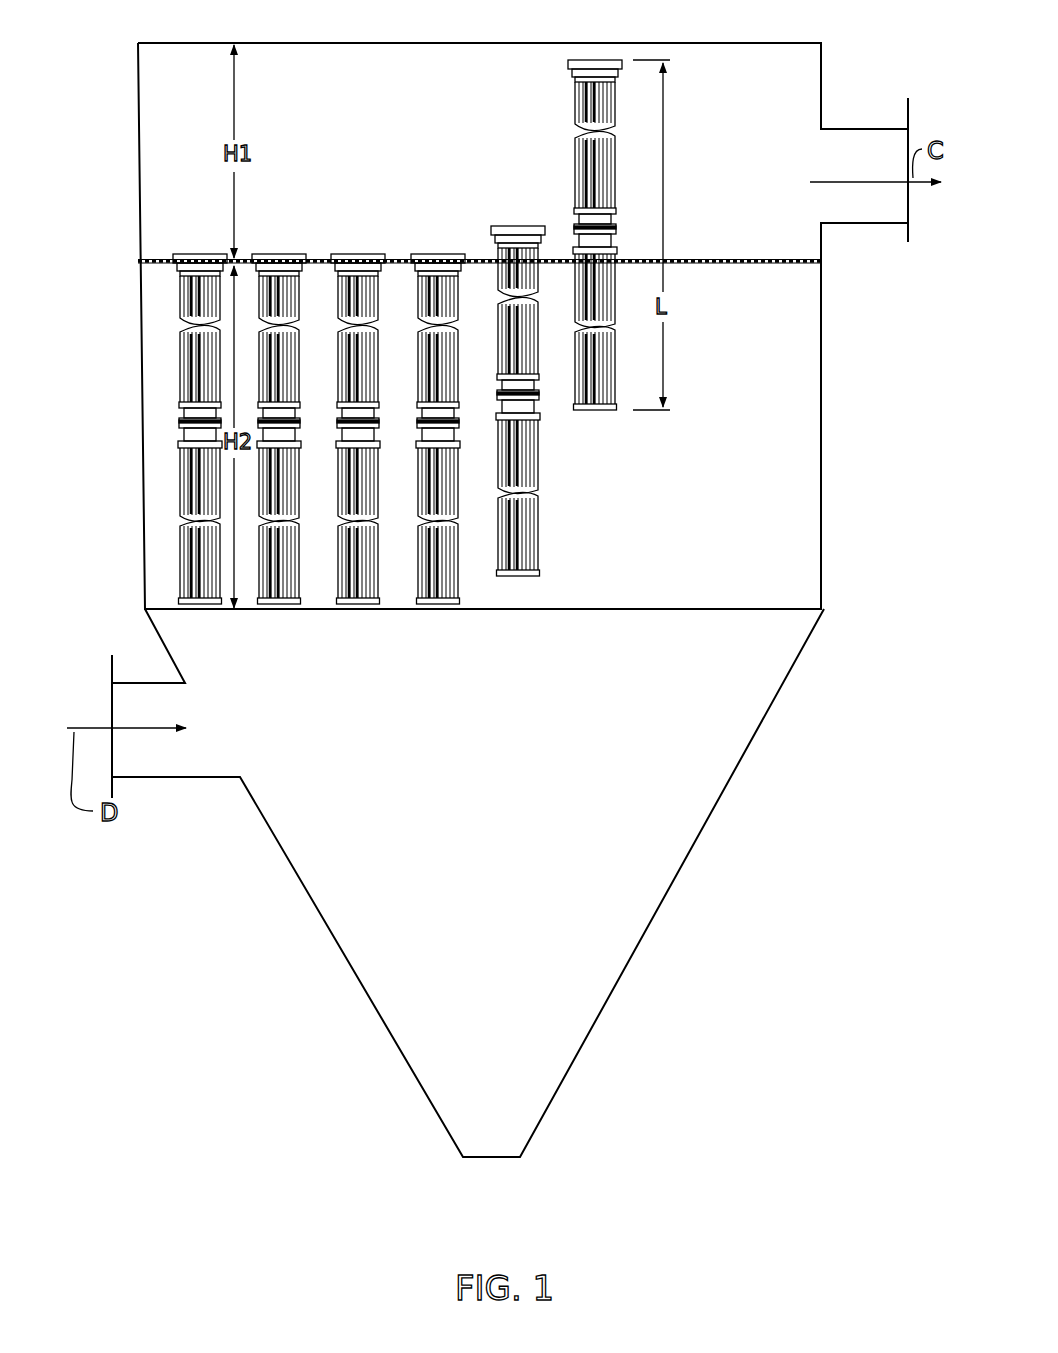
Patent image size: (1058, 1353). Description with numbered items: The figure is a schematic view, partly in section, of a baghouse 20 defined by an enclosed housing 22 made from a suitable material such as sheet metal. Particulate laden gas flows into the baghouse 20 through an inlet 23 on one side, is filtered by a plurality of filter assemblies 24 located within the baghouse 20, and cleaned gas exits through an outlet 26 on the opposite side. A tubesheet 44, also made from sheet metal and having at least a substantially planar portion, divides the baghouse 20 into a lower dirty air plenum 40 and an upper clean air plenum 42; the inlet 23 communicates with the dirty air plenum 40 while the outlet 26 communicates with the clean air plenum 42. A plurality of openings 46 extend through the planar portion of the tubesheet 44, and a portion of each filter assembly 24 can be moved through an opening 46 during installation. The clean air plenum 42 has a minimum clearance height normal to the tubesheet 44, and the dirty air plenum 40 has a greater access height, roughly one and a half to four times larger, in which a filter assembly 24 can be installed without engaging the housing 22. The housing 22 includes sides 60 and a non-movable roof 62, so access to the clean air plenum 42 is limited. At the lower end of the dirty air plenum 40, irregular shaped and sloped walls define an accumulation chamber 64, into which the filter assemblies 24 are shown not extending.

The baghouse 20 is at (808, 701).
The housing 22 is at (829, 613).
The inlet 23 is at (190, 777).
The filter assemblies 24 is at (212, 249).
The outlet 26 is at (853, 223).
The dirty air plenum 40 is at (705, 513).
The clean air plenum 42 is at (498, 135).
The tubesheet 44 is at (715, 259).
The openings 46 is at (685, 263).
The sides 60 is at (142, 506).
The roof 62 is at (379, 43).
The accumulation chamber 64 is at (508, 941).